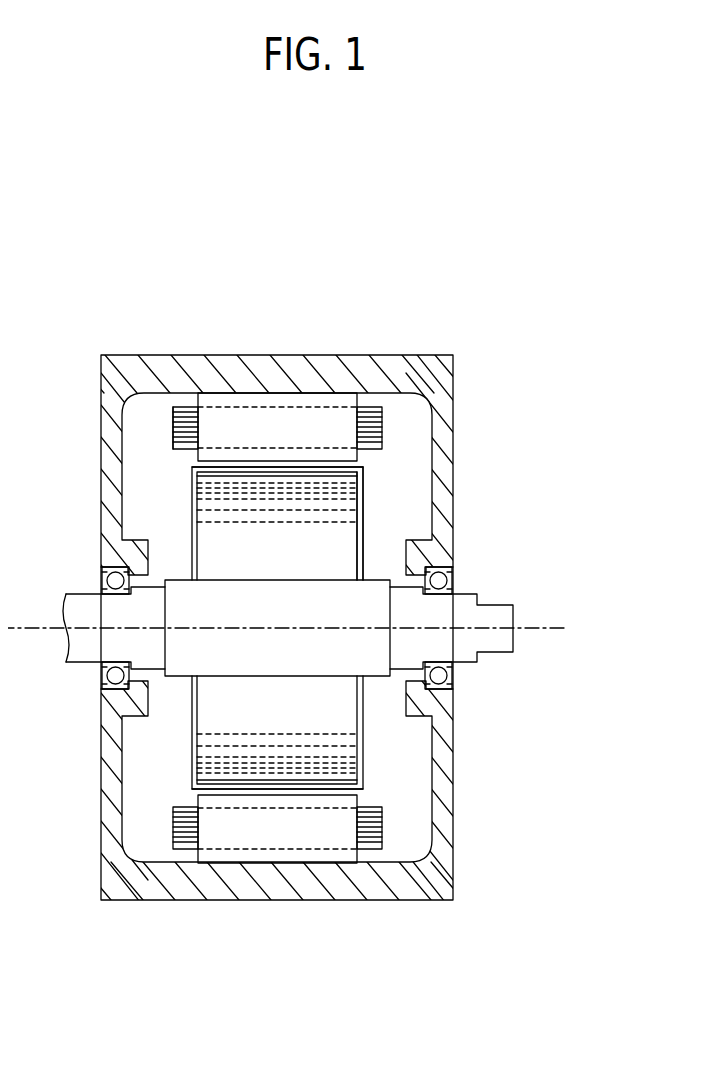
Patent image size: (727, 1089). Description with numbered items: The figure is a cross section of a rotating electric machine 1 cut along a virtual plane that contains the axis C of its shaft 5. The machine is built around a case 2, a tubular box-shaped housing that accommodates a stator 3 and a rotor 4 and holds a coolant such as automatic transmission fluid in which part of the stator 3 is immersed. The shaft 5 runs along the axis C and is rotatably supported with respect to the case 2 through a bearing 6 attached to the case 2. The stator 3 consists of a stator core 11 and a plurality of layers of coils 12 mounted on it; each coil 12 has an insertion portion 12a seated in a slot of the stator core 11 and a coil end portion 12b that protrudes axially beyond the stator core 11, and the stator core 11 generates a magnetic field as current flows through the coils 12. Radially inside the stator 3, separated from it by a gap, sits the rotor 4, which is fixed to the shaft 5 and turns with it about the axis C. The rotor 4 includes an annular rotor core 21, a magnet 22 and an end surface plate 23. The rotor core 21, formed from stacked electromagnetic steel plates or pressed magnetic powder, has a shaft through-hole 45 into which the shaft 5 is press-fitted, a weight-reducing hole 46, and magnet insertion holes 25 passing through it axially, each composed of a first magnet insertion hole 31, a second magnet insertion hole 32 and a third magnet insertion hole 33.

The rotating electric machine 1 is at (527, 222).
The case 2 is at (412, 348).
The stator 3 is at (243, 546).
The rotor 4 is at (321, 583).
The shaft 5 is at (507, 638).
The bearing 6 is at (110, 678).
The stator core 11 is at (300, 392).
The coil 12 is at (188, 400).
The insertion portion 12a is at (249, 420).
The coil end portion 12b is at (173, 427).
The rotor core 21 is at (342, 553).
The magnet 22 is at (330, 472).
The end surface plate 23 is at (357, 760).
The magnet insertion hole 25 is at (400, 580).
The first magnet insertion hole 31 is at (343, 476).
The second magnet insertion hole 32 is at (362, 478).
The third magnet insertion hole 33 is at (362, 488).
The shaft through-hole 45 is at (205, 582).
The weight-reducing hole 46 is at (360, 512).
The axis C is at (545, 627).